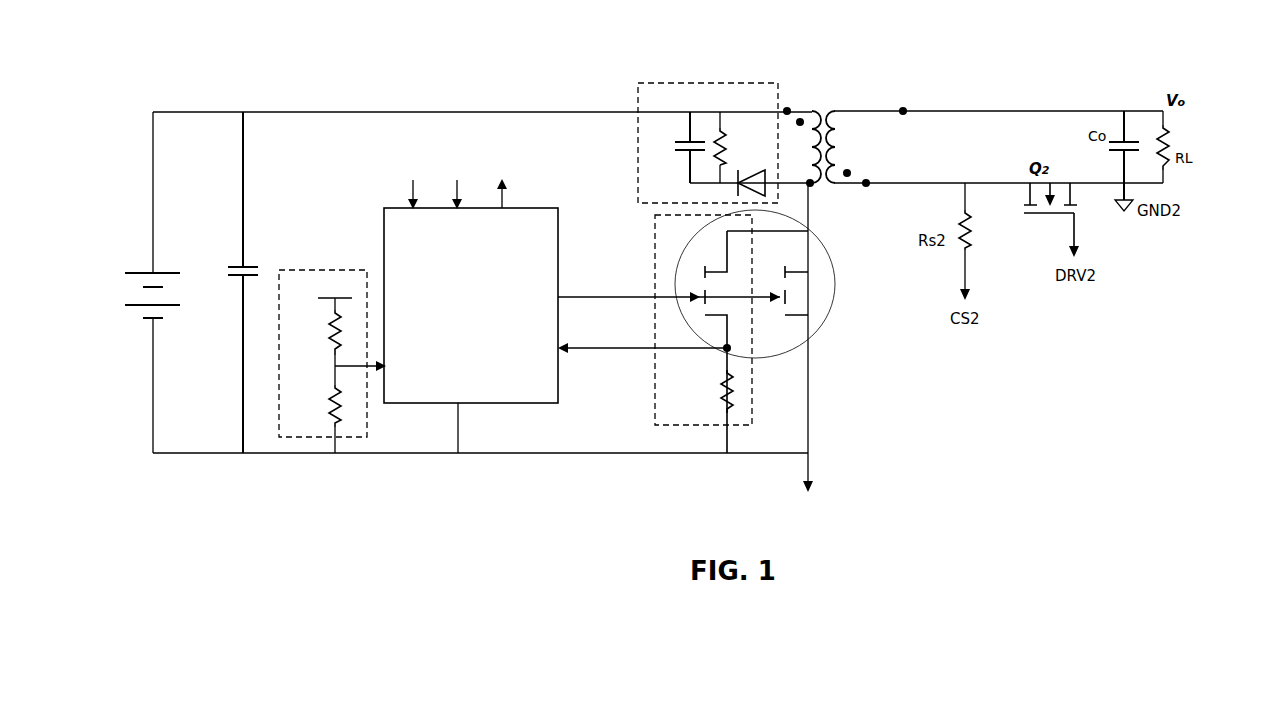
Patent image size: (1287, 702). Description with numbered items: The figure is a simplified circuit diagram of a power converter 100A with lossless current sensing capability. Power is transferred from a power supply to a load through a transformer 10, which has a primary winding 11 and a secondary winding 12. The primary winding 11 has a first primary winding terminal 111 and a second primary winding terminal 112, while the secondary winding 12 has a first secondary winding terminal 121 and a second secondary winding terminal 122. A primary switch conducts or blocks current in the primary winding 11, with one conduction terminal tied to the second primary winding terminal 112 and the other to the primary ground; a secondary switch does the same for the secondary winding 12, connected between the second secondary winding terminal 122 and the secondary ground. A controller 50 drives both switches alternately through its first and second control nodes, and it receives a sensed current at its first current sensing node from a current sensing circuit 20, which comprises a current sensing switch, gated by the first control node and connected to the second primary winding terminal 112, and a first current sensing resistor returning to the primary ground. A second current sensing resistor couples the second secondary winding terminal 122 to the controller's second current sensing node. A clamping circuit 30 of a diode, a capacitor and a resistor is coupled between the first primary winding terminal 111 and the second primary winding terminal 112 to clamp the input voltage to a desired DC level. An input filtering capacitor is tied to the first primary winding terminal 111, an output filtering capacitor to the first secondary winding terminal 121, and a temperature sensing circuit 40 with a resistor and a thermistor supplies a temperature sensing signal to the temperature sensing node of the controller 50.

The power converter 100A is at (276, 62).
The transformer 10 is at (828, 106).
The primary winding 11 is at (805, 161).
The secondary winding 12 is at (872, 161).
The current sensing circuit 20 is at (666, 374).
The clamping circuit 30 is at (657, 103).
The temperature sensing circuit 40 is at (296, 276).
The controller 50 is at (386, 210).
The first primary winding terminal 111 is at (790, 106).
The second primary winding terminal 112 is at (812, 190).
The first secondary winding terminal 121 is at (905, 106).
The second secondary winding terminal 122 is at (868, 190).